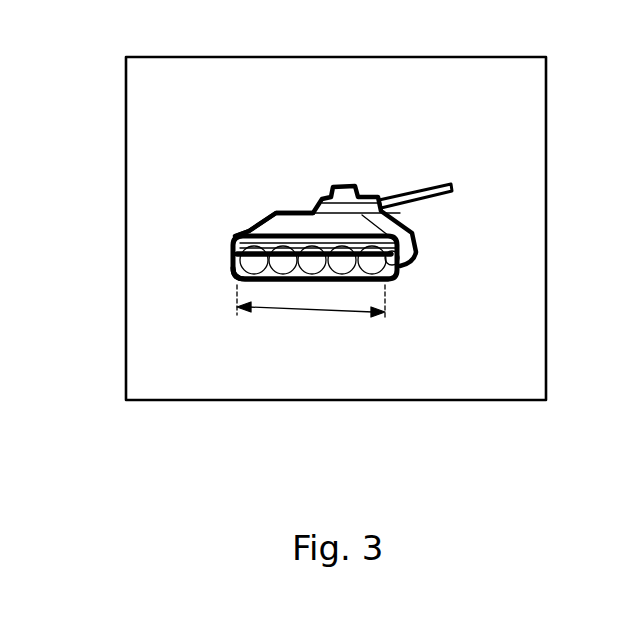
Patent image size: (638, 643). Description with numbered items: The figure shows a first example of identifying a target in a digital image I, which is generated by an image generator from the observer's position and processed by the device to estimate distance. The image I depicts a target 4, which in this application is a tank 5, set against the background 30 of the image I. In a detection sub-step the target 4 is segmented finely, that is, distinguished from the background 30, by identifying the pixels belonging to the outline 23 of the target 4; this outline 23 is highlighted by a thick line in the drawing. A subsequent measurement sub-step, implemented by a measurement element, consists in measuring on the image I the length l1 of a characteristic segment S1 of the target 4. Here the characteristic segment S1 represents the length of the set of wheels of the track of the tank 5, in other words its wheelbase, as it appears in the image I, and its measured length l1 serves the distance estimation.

The digital image I is at (351, 401).
The background 30 is at (150, 166).
The target 4 is at (332, 178).
The outline 23 is at (233, 237).
The characteristic segment S1 is at (236, 268).
The tank 5 is at (237, 279).
The length l1 is at (308, 312).